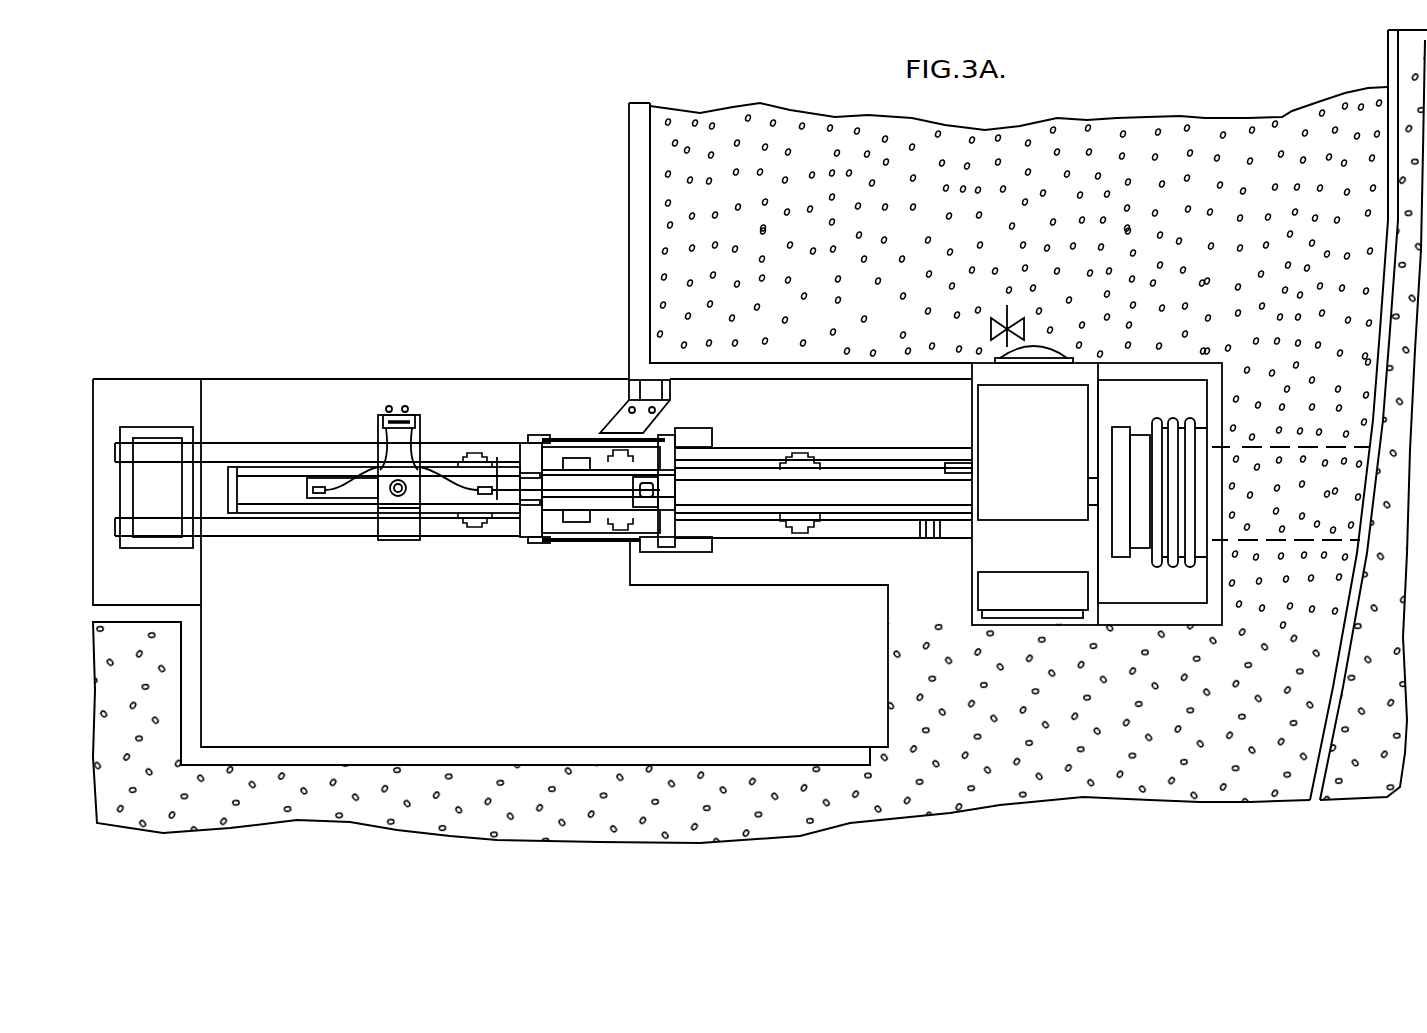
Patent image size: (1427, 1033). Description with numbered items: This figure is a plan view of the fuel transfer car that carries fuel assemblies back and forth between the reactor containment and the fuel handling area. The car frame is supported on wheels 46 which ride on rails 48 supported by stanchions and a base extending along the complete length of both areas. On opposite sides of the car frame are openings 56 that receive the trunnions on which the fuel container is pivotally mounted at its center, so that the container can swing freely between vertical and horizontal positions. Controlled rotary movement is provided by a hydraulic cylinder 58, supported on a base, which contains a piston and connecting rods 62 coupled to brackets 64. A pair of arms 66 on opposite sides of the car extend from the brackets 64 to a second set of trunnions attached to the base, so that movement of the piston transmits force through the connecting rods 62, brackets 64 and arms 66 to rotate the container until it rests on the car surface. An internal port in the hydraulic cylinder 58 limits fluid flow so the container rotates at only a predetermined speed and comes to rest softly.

The wheels 46 is at (815, 528).
The rails 48 is at (900, 532).
The openings 56 is at (577, 523).
The hydraulic cylinder 58 is at (463, 485).
The connecting rods 62 is at (524, 445).
The brackets 64 is at (670, 455).
The arms 66 is at (598, 540).